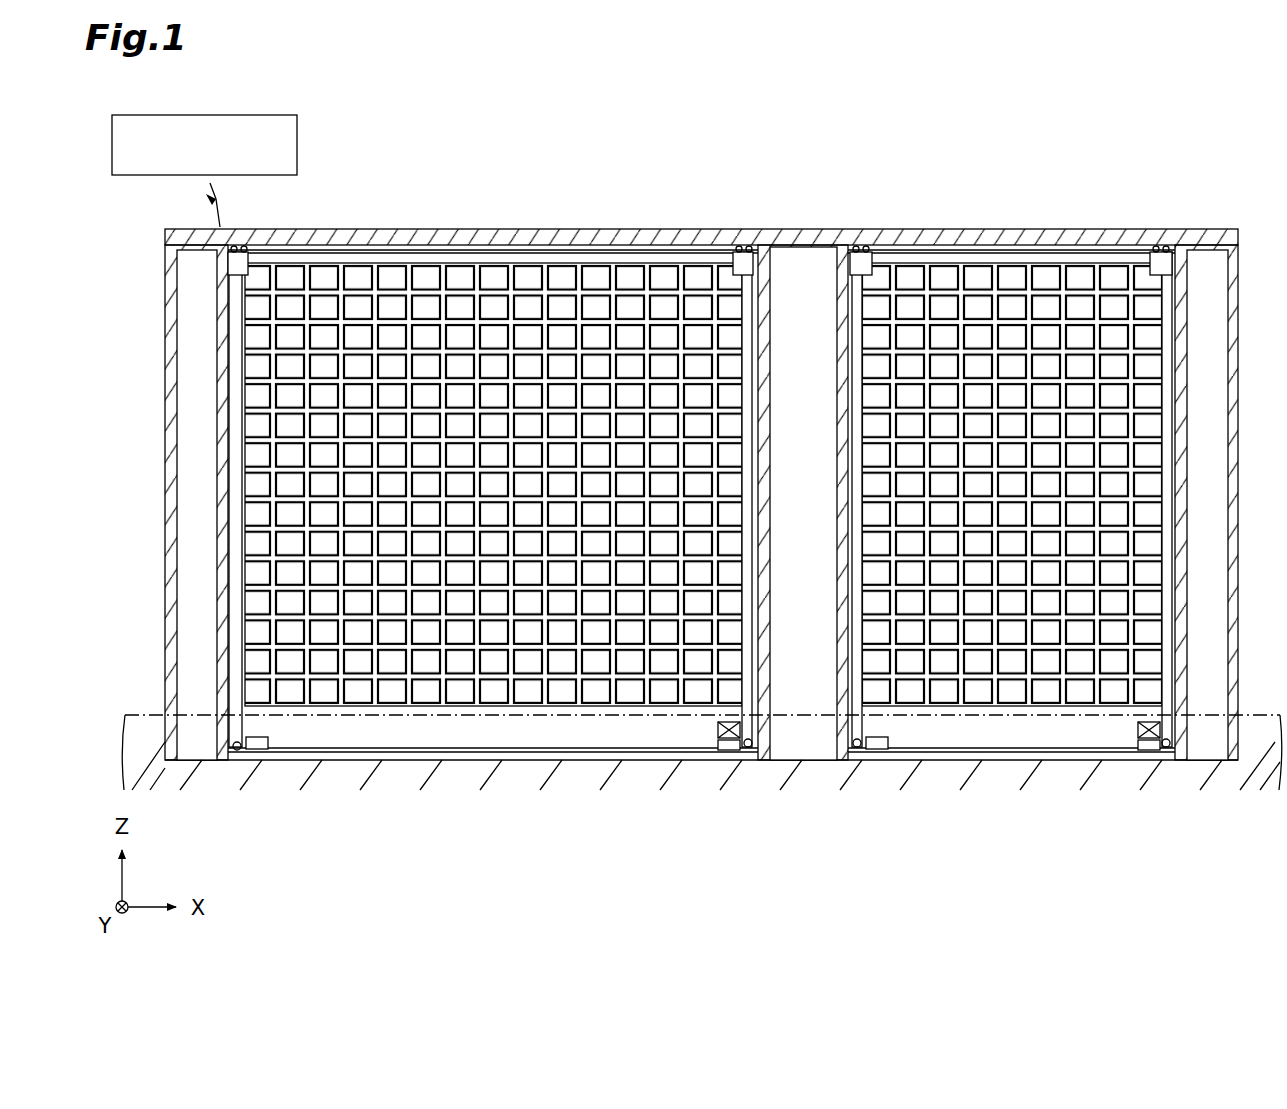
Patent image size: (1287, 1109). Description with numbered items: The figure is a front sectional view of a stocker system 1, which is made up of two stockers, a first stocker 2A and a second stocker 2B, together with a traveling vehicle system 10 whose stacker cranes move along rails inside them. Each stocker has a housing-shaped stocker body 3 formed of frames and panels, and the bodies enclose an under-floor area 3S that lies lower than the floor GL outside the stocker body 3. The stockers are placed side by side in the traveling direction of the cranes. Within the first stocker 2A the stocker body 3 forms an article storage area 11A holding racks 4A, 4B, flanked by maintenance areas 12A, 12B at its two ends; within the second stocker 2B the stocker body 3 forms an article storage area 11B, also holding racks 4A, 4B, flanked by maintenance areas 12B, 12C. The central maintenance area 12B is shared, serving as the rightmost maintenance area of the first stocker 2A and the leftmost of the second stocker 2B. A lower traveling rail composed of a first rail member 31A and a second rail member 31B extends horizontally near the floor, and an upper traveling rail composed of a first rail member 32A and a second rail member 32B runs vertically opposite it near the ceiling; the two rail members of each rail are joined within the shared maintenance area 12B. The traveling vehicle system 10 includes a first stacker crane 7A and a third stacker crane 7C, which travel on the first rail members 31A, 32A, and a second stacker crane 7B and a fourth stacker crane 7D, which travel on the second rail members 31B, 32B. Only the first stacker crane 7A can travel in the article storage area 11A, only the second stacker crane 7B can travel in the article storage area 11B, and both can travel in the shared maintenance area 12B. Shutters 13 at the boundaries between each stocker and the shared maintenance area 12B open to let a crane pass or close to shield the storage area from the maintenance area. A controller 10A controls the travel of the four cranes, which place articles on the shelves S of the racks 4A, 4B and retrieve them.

The stocker system 1 is at (731, 180).
The traveling vehicle system 10 is at (804, 227).
The controller 10A is at (238, 113).
The stocker 2A is at (550, 227).
The stocker 2B is at (998, 227).
The stocker body 3 is at (305, 232).
The first rail member 32A is at (378, 250).
The second rail member 32B is at (1060, 250).
The first rail member 31A is at (400, 756).
The second rail member 31B is at (957, 756).
The under-floor area 3S is at (761, 731).
The rack 4A is at (634, 265).
The rack 4B is at (1114, 265).
The shelf S is at (500, 320).
The article storage area 11A is at (479, 481).
The article storage area 11B is at (1010, 481).
The maintenance area 12A is at (178, 481).
The maintenance area 12B is at (826, 481).
The maintenance area 12C is at (1190, 481).
The shutter 13 is at (775, 566).
The first stacker crane 7A is at (748, 766).
The second stacker crane 7B is at (864, 766).
The third stacker crane 7C is at (241, 766).
The fourth stacker crane 7D is at (1158, 766).
The floor GL is at (138, 715).